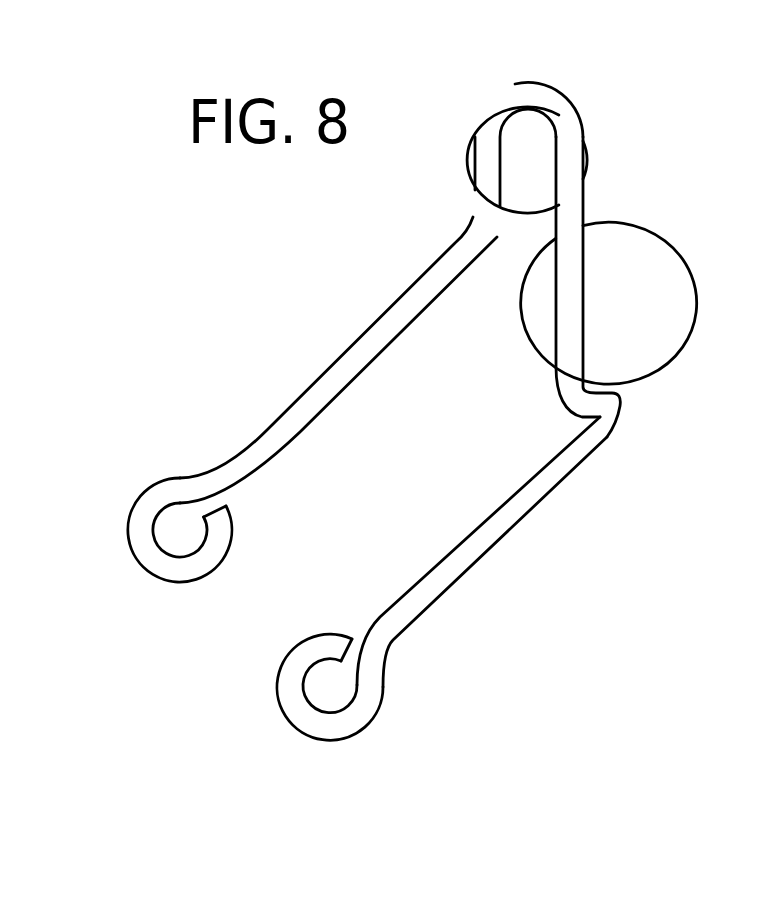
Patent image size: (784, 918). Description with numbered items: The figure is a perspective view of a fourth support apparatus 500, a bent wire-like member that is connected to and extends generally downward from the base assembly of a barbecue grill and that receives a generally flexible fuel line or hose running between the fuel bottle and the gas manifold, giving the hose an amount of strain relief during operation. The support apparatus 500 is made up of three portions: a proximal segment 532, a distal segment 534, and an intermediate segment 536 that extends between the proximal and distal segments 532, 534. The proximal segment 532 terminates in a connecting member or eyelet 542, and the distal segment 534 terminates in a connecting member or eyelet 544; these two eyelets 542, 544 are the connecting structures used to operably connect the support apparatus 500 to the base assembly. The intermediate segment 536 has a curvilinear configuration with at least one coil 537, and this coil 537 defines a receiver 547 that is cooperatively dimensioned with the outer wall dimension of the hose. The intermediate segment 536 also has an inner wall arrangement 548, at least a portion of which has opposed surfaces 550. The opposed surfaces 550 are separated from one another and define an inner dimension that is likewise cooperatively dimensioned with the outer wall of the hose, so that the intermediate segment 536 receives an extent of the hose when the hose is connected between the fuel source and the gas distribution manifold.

The support apparatus 500 is at (683, 292).
The proximal segment 532 is at (308, 407).
The distal segment 534 is at (508, 522).
The intermediate segment 536 is at (570, 270).
The coil 537 is at (522, 97).
The eyelet 542 is at (187, 538).
The eyelet 544 is at (330, 683).
The receiver 547 is at (530, 144).
The inner wall arrangement 548 is at (473, 186).
The opposed surfaces 550 is at (557, 177).